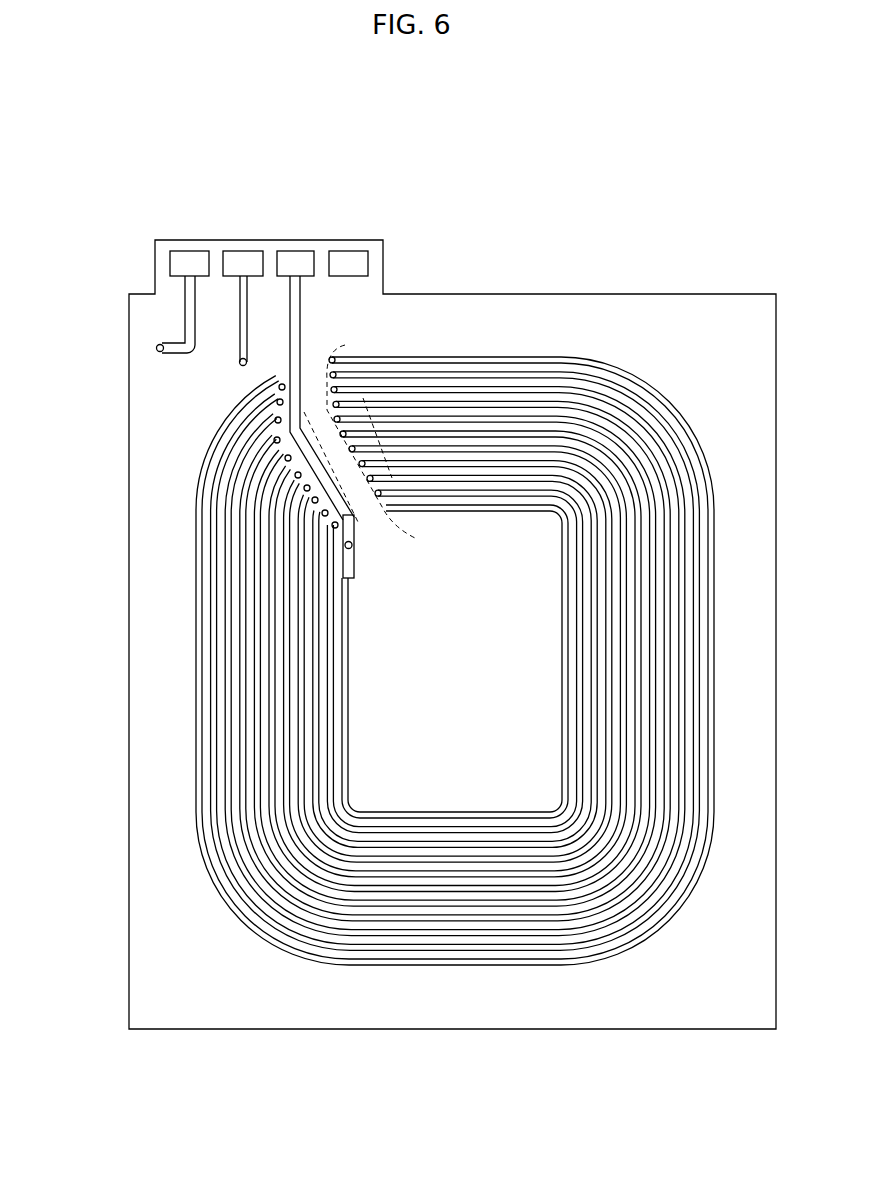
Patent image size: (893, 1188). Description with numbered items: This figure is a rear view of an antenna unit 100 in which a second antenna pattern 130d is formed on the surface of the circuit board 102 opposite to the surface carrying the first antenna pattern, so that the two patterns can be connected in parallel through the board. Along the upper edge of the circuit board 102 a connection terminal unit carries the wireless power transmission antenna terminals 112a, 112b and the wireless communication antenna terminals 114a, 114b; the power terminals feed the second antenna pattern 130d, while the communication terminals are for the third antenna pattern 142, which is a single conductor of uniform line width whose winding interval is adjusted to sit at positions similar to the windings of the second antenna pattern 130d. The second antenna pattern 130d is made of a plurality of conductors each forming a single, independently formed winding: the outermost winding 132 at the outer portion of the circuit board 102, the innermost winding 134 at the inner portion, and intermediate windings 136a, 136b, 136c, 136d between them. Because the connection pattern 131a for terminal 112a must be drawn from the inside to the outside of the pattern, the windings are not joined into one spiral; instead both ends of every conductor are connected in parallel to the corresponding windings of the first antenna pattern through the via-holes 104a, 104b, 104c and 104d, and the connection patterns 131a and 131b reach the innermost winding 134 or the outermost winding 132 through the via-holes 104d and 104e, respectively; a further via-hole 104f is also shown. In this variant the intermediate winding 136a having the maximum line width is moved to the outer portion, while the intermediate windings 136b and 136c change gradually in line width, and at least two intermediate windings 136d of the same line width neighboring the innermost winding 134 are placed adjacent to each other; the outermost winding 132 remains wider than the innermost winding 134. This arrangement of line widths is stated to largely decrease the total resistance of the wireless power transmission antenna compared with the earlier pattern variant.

The antenna unit 100 is at (221, 153).
The circuit board 102 is at (513, 293).
The wireless communication antenna terminal 114b is at (190, 250).
The wireless power transmission antenna terminal 112b is at (242, 250).
The wireless power transmission antenna terminal 112a is at (296, 250).
The wireless communication antenna terminal 114a is at (349, 250).
The connection pattern 131b is at (243, 307).
The connection pattern 131a is at (302, 312).
The via hole 104f is at (155, 348).
The third antenna pattern 142 is at (238, 364).
The via-hole 104e is at (277, 388).
The via-hole 104d is at (273, 441).
The via-hole 104a is at (337, 358).
The via-hole 104b is at (357, 545).
The via-hole 104c is at (388, 511).
The second antenna pattern 130d is at (570, 343).
The outermost winding 132 is at (201, 540).
The innermost winding 134 is at (350, 645).
The intermediate winding 136a is at (256, 600).
The intermediate winding 136b is at (212, 648).
The intermediate winding 136c is at (289, 720).
The intermediate winding 136d is at (330, 685).